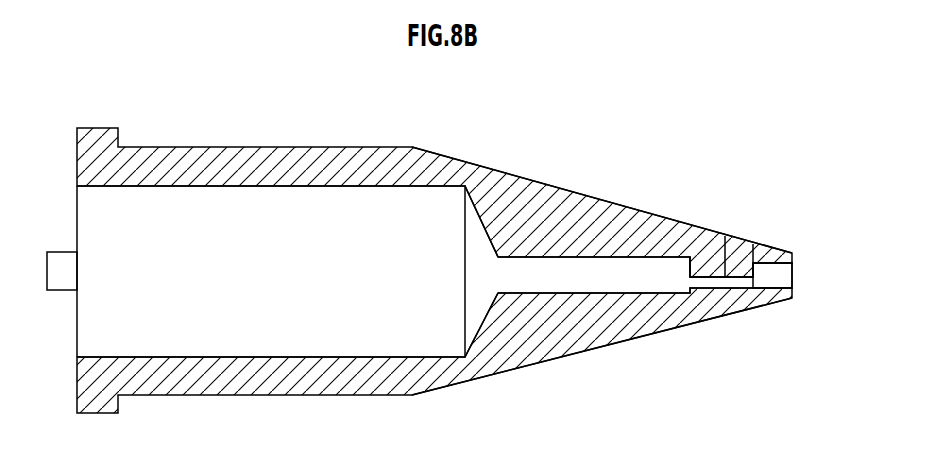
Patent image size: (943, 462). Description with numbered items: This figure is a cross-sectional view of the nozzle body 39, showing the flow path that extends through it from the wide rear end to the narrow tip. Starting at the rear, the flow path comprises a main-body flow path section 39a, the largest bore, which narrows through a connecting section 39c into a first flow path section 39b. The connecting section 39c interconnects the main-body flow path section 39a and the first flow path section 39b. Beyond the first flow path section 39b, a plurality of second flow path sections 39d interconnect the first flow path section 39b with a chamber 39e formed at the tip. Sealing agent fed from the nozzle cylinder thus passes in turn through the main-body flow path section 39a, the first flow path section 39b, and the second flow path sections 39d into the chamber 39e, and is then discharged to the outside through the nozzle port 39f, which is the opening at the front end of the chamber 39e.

The nozzle body 39 is at (155, 170).
The main-body flow path section 39a is at (293, 198).
The first flow path section 39b is at (590, 268).
The connecting section 39c is at (487, 220).
The second flow path sections 39d is at (727, 248).
The chamber 39e is at (772, 255).
The nozzle port 39f is at (795, 277).